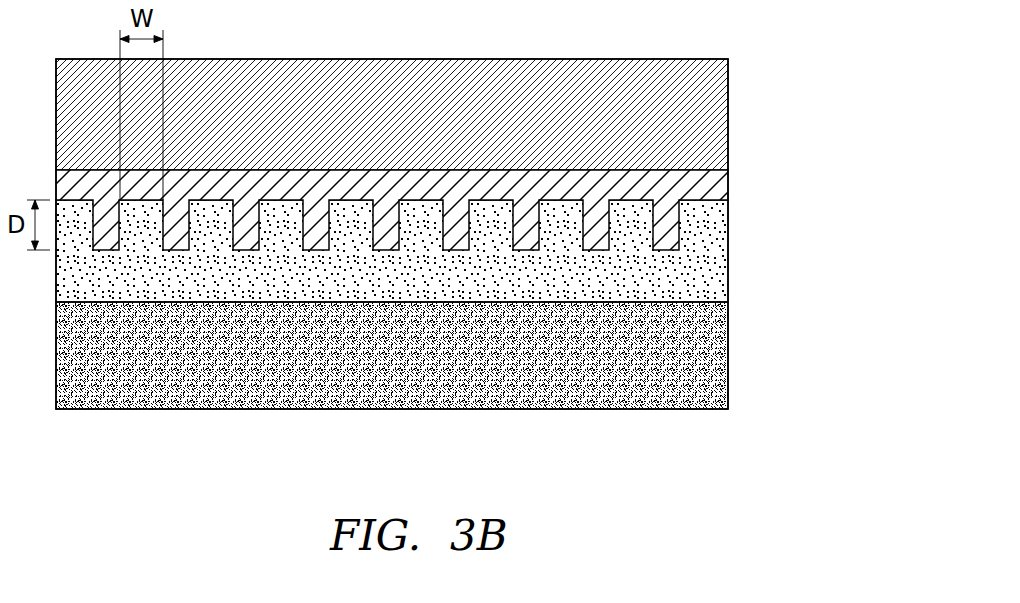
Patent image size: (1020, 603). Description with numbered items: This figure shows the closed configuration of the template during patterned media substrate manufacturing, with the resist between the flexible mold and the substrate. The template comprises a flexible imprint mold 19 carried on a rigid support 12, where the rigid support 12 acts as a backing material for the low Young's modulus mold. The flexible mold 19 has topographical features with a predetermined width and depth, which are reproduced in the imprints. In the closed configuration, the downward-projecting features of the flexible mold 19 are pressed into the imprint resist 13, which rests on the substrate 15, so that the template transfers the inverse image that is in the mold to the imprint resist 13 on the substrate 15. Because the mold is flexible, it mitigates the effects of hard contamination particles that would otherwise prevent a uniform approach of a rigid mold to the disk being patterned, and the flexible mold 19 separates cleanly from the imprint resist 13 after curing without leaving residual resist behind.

The rigid support 12 is at (728, 112).
The flexible imprint mold 19 is at (728, 187).
The imprint resist 13 is at (728, 262).
The substrate 15 is at (728, 360).